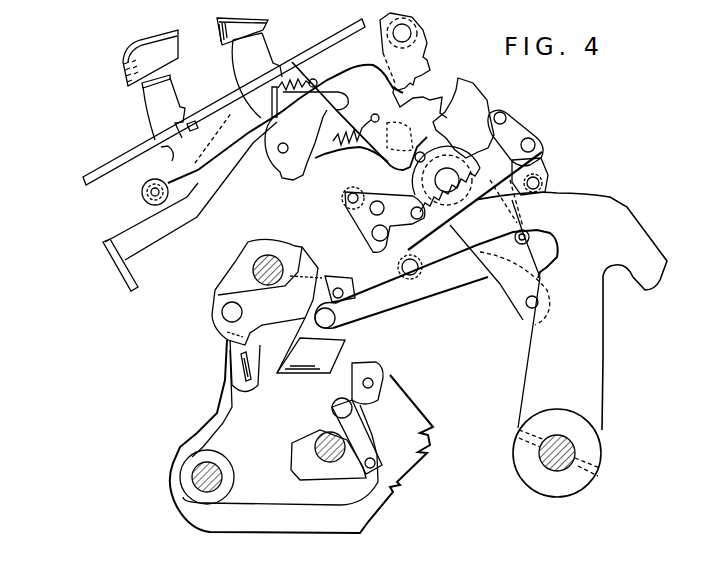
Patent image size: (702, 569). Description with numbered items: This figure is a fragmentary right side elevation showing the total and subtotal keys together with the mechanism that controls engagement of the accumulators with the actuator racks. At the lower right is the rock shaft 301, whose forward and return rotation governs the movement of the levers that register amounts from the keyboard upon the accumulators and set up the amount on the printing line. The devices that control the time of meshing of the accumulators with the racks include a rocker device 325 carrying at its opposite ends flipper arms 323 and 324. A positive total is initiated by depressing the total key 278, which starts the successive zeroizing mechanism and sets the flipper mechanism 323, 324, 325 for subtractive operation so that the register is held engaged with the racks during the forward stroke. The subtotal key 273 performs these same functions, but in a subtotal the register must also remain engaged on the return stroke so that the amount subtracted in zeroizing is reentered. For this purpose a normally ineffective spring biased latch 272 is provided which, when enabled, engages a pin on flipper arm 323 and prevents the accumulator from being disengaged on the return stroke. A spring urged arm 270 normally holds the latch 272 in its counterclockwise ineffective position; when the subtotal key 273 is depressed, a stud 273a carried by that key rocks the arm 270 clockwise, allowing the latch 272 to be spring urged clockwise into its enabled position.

The total key 278 is at (123, 68).
The subtotal key 273 is at (217, 26).
The stud 273a is at (280, 58).
The spring urged arm 270 is at (349, 100).
The spring biased latch 272 is at (367, 149).
The flipper arm 324 is at (516, 127).
The rocker device 325 is at (537, 152).
The flipper arm 323 is at (352, 203).
The rock shaft 301 is at (573, 450).